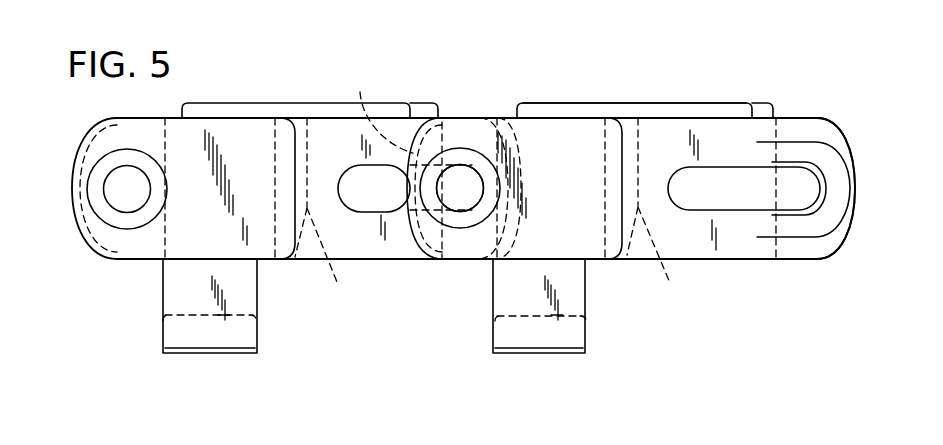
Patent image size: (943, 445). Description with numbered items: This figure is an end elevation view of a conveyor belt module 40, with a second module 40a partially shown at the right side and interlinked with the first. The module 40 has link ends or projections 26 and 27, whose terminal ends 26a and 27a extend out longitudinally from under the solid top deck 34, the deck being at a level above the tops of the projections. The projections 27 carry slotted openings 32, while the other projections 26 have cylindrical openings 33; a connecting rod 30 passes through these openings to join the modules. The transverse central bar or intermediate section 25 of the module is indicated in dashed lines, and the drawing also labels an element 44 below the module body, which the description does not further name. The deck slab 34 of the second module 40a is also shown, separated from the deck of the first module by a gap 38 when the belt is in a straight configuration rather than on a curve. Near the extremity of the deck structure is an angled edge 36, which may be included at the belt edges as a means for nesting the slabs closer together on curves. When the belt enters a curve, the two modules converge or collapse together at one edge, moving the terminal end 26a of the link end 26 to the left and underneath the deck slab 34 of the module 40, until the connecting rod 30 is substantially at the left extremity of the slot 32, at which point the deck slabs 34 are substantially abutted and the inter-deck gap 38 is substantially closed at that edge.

The transverse central bar 25 is at (490, 215).
The link end 26 is at (70, 222).
The terminal end 26a is at (73, 153).
The link end 27 is at (417, 262).
The terminal end 27a is at (847, 240).
The connecting rod 30 is at (458, 198).
The slotted opening 32 is at (368, 195).
The cylindrical opening 33 is at (127, 182).
The solid top deck 34 is at (270, 103).
The angled edge 36 is at (437, 110).
The gap 38 is at (478, 112).
The module 40 is at (88, 268).
The second module 40a is at (668, 93).
The attachment tab 44 is at (207, 313).